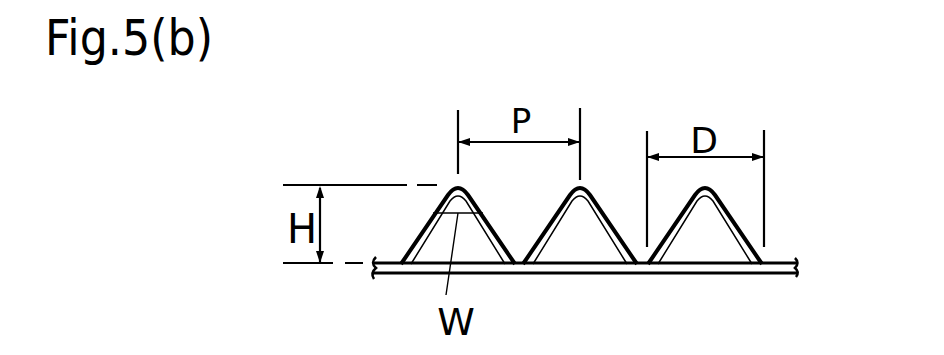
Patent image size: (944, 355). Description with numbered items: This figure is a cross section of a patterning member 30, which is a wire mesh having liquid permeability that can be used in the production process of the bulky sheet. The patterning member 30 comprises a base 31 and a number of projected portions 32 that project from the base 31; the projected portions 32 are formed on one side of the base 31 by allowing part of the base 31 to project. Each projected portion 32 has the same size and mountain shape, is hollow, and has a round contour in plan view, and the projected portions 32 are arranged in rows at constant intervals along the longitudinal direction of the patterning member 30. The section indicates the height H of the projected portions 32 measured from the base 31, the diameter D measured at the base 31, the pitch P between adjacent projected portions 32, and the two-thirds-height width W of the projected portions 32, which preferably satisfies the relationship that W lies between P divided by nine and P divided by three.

The patterning member 30 is at (782, 131).
The base 31 is at (784, 258).
The projected portions 32 is at (716, 186).